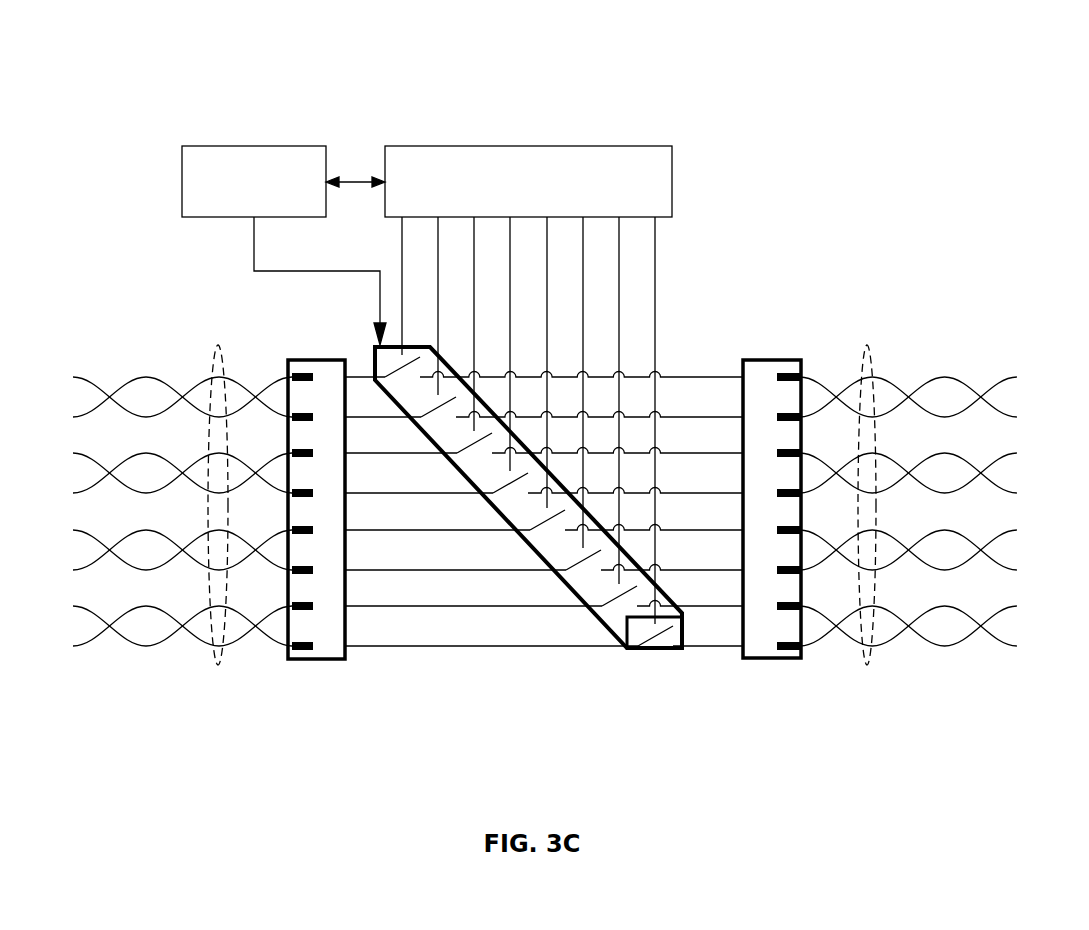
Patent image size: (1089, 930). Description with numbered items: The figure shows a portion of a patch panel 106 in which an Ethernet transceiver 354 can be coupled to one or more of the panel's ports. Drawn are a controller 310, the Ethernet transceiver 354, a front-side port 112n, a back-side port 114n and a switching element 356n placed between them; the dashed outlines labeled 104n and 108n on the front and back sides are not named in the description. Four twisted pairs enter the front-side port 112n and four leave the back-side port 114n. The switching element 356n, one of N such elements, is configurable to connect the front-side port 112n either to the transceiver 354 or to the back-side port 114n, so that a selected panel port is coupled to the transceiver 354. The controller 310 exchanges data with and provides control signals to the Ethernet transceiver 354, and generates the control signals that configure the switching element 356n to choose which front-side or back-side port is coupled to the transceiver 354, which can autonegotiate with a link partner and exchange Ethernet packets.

The patch panel 106 is at (170, 102).
The controller 310 is at (284, 245).
The Ethernet transceiver 354 is at (499, 385).
The switching element 356n is at (662, 652).
The front-side port 112n is at (312, 661).
The back-side port 114n is at (763, 660).
The first cable 104n is at (216, 345).
The second cable 108n is at (864, 345).